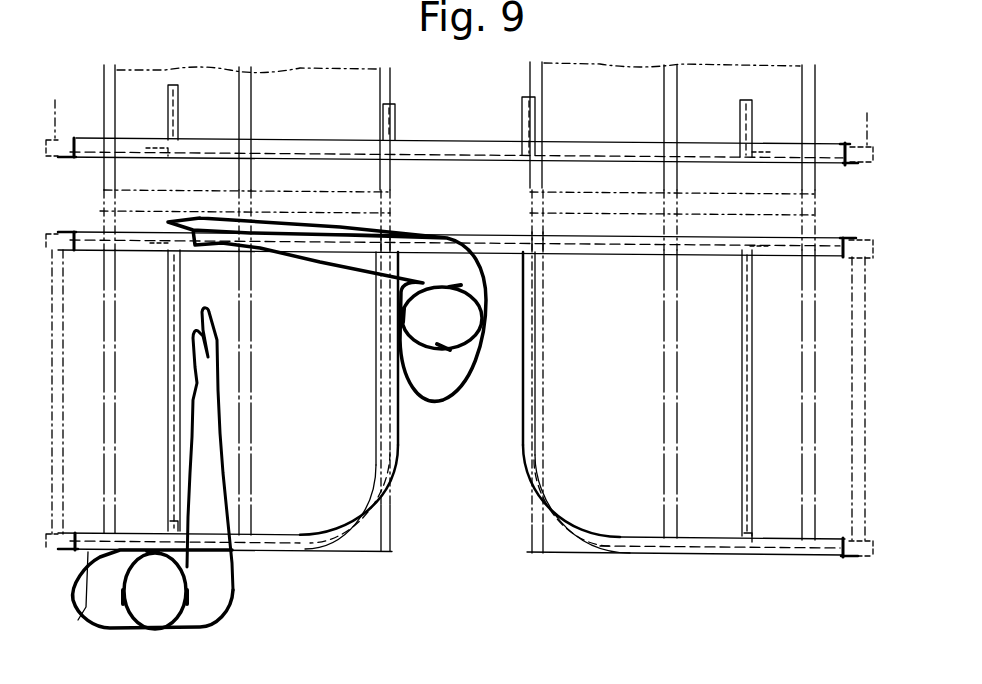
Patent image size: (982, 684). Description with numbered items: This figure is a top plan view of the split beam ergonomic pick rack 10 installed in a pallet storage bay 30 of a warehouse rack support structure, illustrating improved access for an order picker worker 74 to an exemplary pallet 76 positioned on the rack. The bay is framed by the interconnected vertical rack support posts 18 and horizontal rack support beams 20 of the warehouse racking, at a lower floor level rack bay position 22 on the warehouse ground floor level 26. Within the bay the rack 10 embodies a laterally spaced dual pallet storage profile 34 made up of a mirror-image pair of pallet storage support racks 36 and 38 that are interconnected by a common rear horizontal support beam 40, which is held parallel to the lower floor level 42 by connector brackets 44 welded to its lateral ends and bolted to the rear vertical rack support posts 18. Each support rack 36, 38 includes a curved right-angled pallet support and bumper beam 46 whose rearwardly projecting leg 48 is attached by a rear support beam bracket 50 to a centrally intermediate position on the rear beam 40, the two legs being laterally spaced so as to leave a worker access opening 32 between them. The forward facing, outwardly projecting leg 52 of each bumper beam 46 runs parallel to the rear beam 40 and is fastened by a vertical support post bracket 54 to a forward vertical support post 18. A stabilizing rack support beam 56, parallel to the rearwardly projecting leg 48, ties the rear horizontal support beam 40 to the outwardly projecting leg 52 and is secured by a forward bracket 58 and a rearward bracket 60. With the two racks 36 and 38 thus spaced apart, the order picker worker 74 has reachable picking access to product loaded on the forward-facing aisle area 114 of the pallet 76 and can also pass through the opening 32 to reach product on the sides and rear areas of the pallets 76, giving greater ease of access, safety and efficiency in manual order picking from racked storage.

The split beam ergonomic pick rack 10 is at (448, 577).
The vertical rack support post 18 is at (68, 137).
The horizontal rack support beam 20 is at (65, 105).
The lower floor level rack bay position 22 is at (498, 535).
The warehouse ground floor level 26 is at (437, 194).
The pallet storage bay 30 is at (228, 445).
The worker access opening 32 is at (452, 443).
The laterally spaced dual pallet storage profile 34 is at (684, 442).
The pallet storage support rack 36 is at (320, 558).
The pallet storage support rack 38 is at (707, 563).
The rear horizontal support beam 40 is at (273, 138).
The lower floor level 42 is at (513, 378).
The connector bracket 44 is at (68, 157).
The curved right-angled pallet support and bumper beam 46 is at (363, 498).
The rearwardly projecting leg 48 is at (451, 445).
The rear support beam bracket 50 is at (383, 230).
The forward facing outwardly projecting leg 52 is at (802, 585).
The vertical support post bracket 54 is at (62, 551).
The stabilizing rack support beam 56 is at (178, 115).
The forward bracket 58 is at (167, 543).
The rearward bracket 60 is at (157, 155).
The order picker worker 74 is at (480, 350).
The pallet 76 is at (280, 68).
The forward-facing aisle area 114 is at (467, 602).